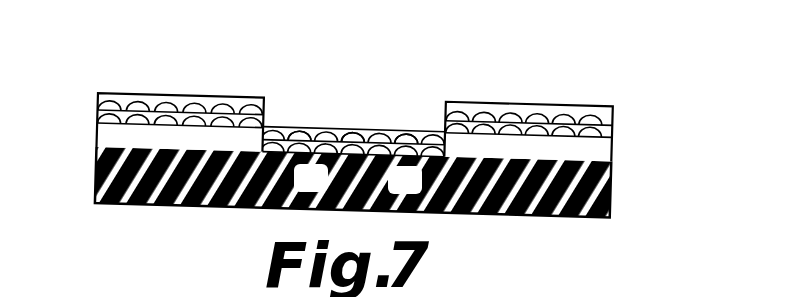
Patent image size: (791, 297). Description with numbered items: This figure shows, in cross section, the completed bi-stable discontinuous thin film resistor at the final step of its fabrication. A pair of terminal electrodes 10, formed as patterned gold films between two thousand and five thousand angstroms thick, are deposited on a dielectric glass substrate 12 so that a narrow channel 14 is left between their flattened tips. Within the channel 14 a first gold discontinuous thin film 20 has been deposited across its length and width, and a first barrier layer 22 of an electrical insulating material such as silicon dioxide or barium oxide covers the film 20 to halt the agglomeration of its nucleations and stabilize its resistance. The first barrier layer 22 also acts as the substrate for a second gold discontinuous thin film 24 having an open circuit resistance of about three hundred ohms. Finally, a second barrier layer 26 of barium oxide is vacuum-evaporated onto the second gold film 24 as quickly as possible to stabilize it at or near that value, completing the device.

The terminal electrodes 10 is at (100, 132).
The dielectric glass substrate 12 is at (100, 176).
The channel 14 is at (349, 122).
The first gold discontinuous thin film 20 is at (302, 152).
The first barrier layer 22 is at (402, 153).
The second gold discontinuous thin film 24 is at (414, 134).
The second barrier layer 26 is at (309, 131).